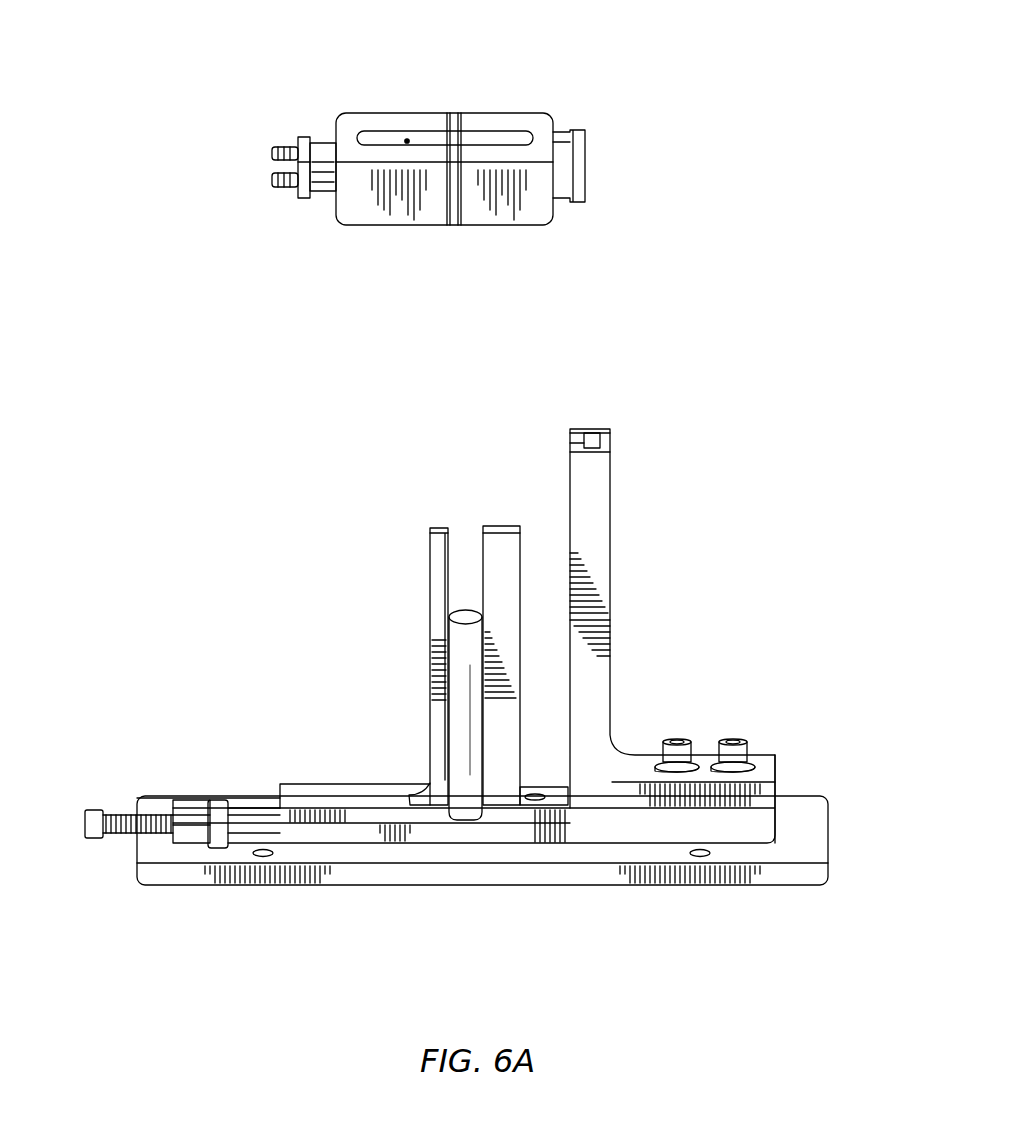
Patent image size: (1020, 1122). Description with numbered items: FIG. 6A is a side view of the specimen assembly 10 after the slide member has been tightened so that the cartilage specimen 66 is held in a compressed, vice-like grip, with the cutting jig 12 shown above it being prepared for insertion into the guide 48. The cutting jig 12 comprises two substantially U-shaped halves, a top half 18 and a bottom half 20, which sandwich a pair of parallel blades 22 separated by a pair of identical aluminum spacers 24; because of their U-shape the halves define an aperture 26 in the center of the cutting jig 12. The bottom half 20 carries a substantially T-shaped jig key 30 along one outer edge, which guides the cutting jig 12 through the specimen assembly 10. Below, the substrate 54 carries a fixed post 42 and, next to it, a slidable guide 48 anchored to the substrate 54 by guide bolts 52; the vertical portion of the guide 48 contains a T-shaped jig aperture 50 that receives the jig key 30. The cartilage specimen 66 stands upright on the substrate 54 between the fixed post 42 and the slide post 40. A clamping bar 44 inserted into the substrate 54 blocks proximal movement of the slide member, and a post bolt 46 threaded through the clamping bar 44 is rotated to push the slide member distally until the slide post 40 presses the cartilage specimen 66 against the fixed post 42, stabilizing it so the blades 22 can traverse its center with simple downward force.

The specimen assembly 10 is at (446, 670).
The cutting jig 12 is at (408, 174).
The top half 18 is at (372, 120).
The bottom half 20 is at (522, 120).
The parallel blades 22 is at (460, 113).
The aluminum spacers 24 is at (446, 228).
The aperture 26 is at (407, 141).
The jig key 30 is at (572, 145).
The slide post 40 is at (437, 705).
The fixed post 42 is at (507, 557).
The clamping bar 44 is at (221, 813).
The post bolt 46 is at (117, 815).
The guide 48 is at (597, 565).
The jig aperture 50 is at (592, 441).
The guide bolts 52 is at (727, 748).
The substrate 54 is at (608, 850).
The cartilage specimen 66 is at (465, 790).